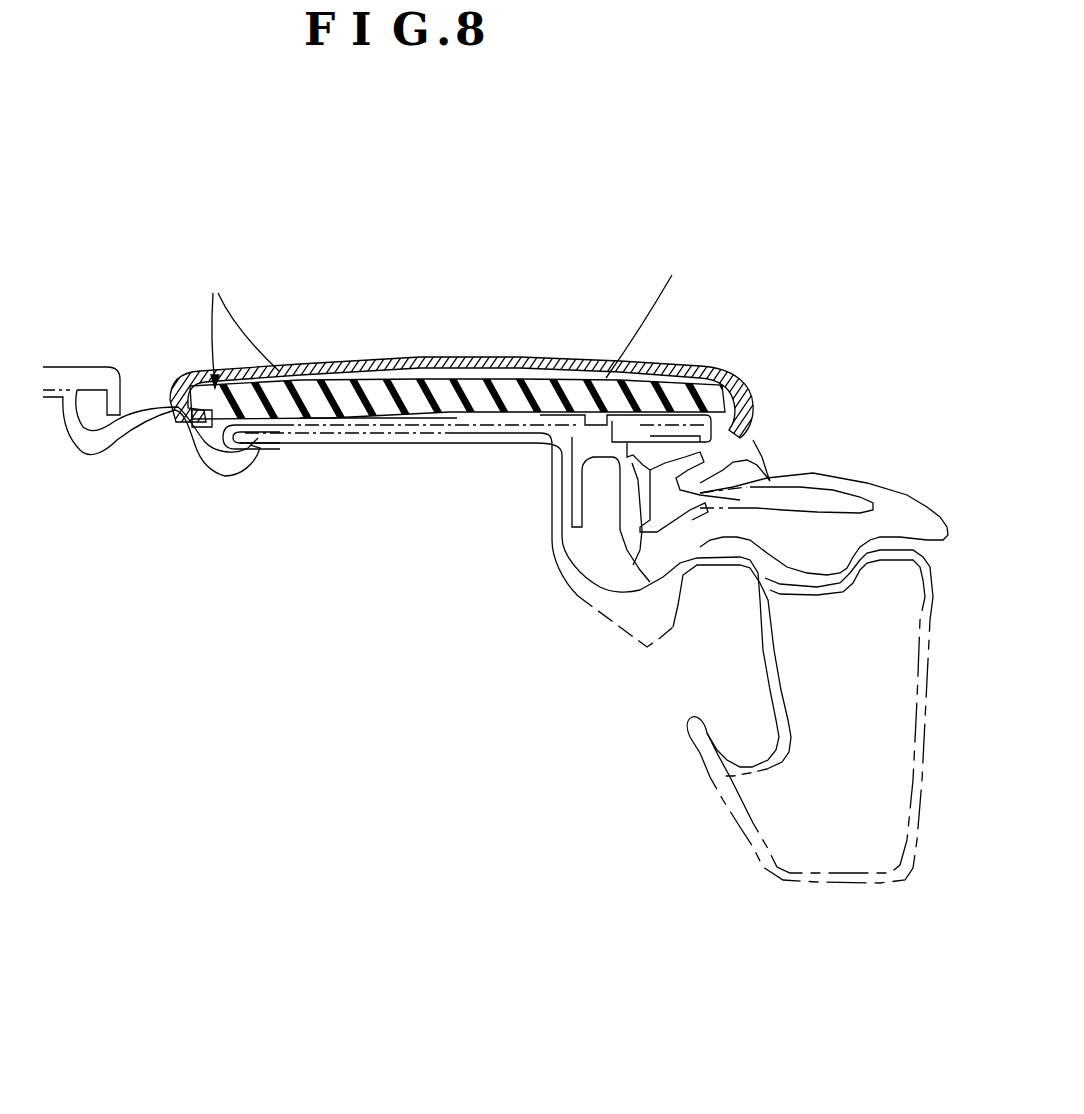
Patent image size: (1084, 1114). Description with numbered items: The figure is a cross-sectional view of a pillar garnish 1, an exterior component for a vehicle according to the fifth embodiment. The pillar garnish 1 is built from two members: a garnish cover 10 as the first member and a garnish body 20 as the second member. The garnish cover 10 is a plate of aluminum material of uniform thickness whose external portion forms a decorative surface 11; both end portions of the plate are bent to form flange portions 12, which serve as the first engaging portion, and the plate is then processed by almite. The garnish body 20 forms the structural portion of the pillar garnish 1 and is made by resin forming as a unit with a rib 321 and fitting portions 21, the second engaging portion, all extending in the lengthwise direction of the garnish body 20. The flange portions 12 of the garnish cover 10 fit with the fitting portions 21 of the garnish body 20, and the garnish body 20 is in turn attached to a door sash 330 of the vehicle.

The pillar garnish 1 is at (822, 325).
The garnish cover 10 is at (506, 352).
The decorative surface 11 is at (433, 355).
The flange portions 12 is at (160, 388).
The garnish body 20 is at (383, 414).
The fitting portions 21 is at (280, 420).
The rib 321 is at (293, 413).
The door sash 330 is at (477, 441).